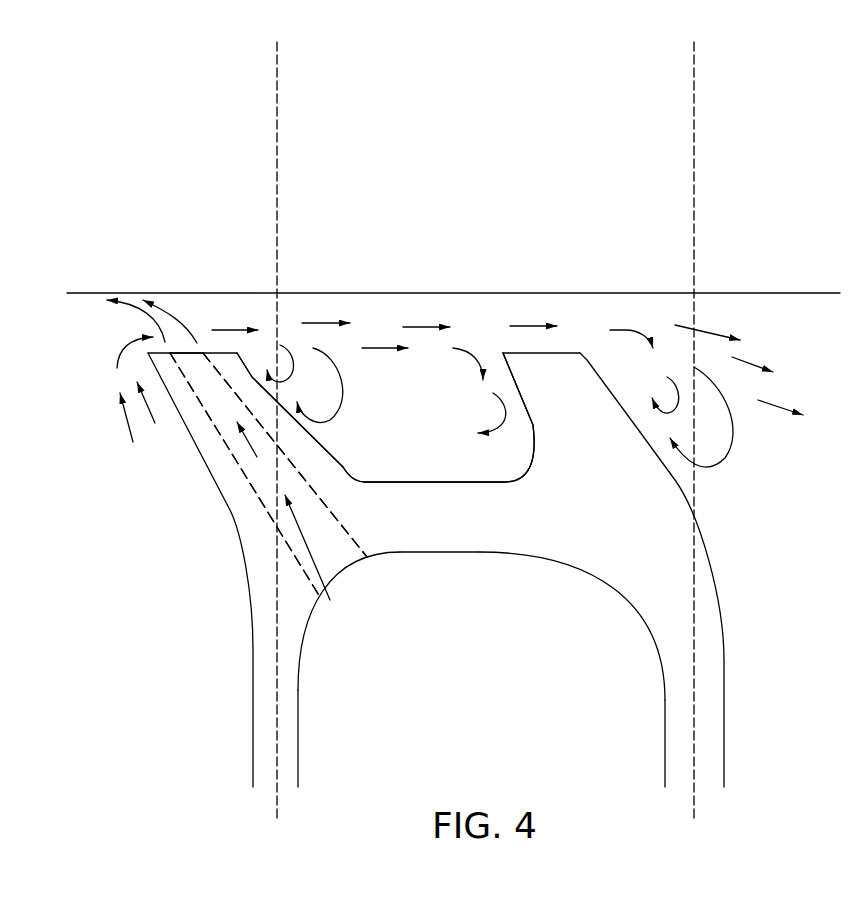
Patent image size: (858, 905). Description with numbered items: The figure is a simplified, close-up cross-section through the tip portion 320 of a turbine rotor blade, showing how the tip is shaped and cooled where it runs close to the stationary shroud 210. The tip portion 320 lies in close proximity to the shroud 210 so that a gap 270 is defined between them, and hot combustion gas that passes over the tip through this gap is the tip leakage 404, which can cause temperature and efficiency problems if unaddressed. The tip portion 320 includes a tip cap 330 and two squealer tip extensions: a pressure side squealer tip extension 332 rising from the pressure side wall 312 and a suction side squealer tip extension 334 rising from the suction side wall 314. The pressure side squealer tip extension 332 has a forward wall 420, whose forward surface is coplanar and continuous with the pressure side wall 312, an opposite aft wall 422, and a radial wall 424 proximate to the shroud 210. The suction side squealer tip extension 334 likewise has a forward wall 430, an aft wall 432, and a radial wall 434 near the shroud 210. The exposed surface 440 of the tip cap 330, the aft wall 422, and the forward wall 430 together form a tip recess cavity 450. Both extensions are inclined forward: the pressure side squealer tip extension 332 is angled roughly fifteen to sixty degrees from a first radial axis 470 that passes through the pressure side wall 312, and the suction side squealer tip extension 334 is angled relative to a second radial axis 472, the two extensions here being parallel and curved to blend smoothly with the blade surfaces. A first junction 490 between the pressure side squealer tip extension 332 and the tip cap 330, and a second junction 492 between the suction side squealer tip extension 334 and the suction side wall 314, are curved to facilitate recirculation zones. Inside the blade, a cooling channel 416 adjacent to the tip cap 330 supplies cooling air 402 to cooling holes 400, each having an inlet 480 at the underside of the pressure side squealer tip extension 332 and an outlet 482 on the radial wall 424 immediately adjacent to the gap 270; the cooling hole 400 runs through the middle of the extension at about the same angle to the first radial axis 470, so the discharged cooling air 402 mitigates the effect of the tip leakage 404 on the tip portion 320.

The shroud 210 is at (88, 292).
The gap 270 is at (103, 308).
The pressure side wall 312 is at (293, 755).
The suction side wall 314 is at (718, 755).
The tip portion 320 is at (735, 590).
The tip cap 330 is at (485, 543).
The pressure side squealer tip extension 332 is at (251, 375).
The suction side squealer tip extension 334 is at (588, 365).
The cooling holes 400 is at (350, 537).
The cooling air 402 is at (182, 353).
The tip leakage 404 is at (328, 322).
The cooling channel 416 is at (506, 754).
The forward wall 420 is at (197, 440).
The aft wall 422 is at (330, 450).
The radial wall 424 is at (218, 353).
The forward wall 430 is at (533, 427).
The aft wall 432 is at (613, 392).
The radial wall 434 is at (535, 353).
The exposed surface 440 is at (425, 482).
The tip recess cavity 450 is at (447, 424).
The first radial axis 470 is at (278, 72).
The second radial axis 472 is at (695, 72).
The inlet 480 is at (327, 598).
The outlet 482 is at (180, 326).
The first junction 490 is at (357, 478).
The second junction 492 is at (728, 518).